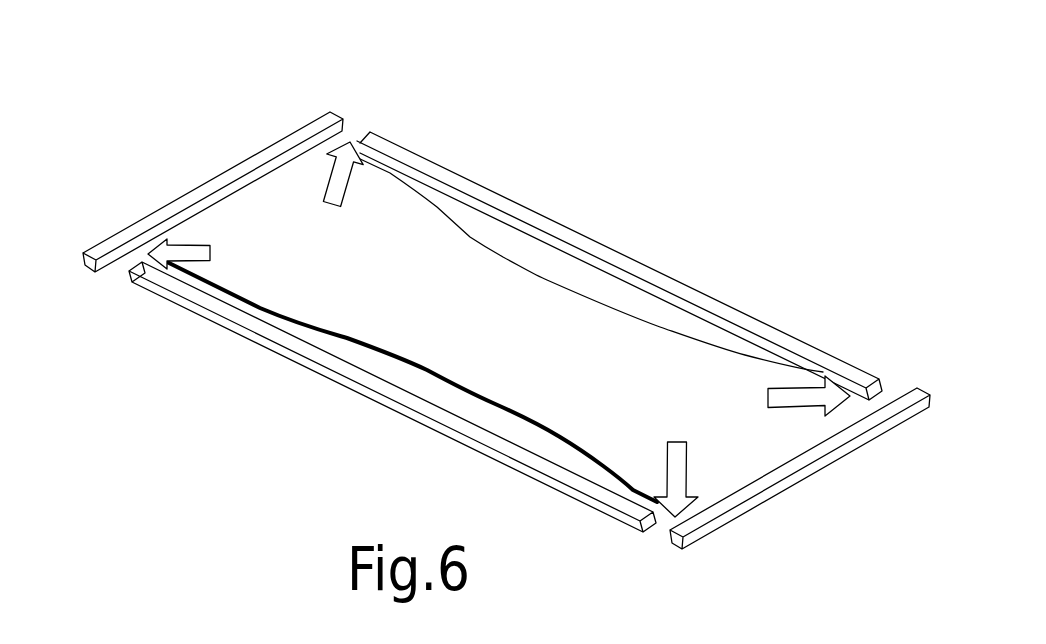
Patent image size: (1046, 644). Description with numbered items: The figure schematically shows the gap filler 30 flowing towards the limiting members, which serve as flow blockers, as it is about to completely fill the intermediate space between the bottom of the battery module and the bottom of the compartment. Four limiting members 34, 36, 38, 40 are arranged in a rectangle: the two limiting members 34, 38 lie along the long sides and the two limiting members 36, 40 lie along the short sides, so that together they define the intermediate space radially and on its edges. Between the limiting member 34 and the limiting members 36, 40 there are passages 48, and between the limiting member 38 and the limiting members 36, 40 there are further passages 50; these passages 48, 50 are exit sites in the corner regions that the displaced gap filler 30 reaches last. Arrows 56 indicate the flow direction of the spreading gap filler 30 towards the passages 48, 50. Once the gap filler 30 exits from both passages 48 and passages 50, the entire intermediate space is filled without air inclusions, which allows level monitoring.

The gap filler 30 is at (365, 318).
The limiting member 34 is at (547, 222).
The limiting member 36 is at (200, 195).
The limiting member 38 is at (423, 403).
The limiting member 40 is at (815, 452).
The passage 48 is at (362, 132).
The passage 50 is at (118, 275).
The arrow 56 is at (355, 160).